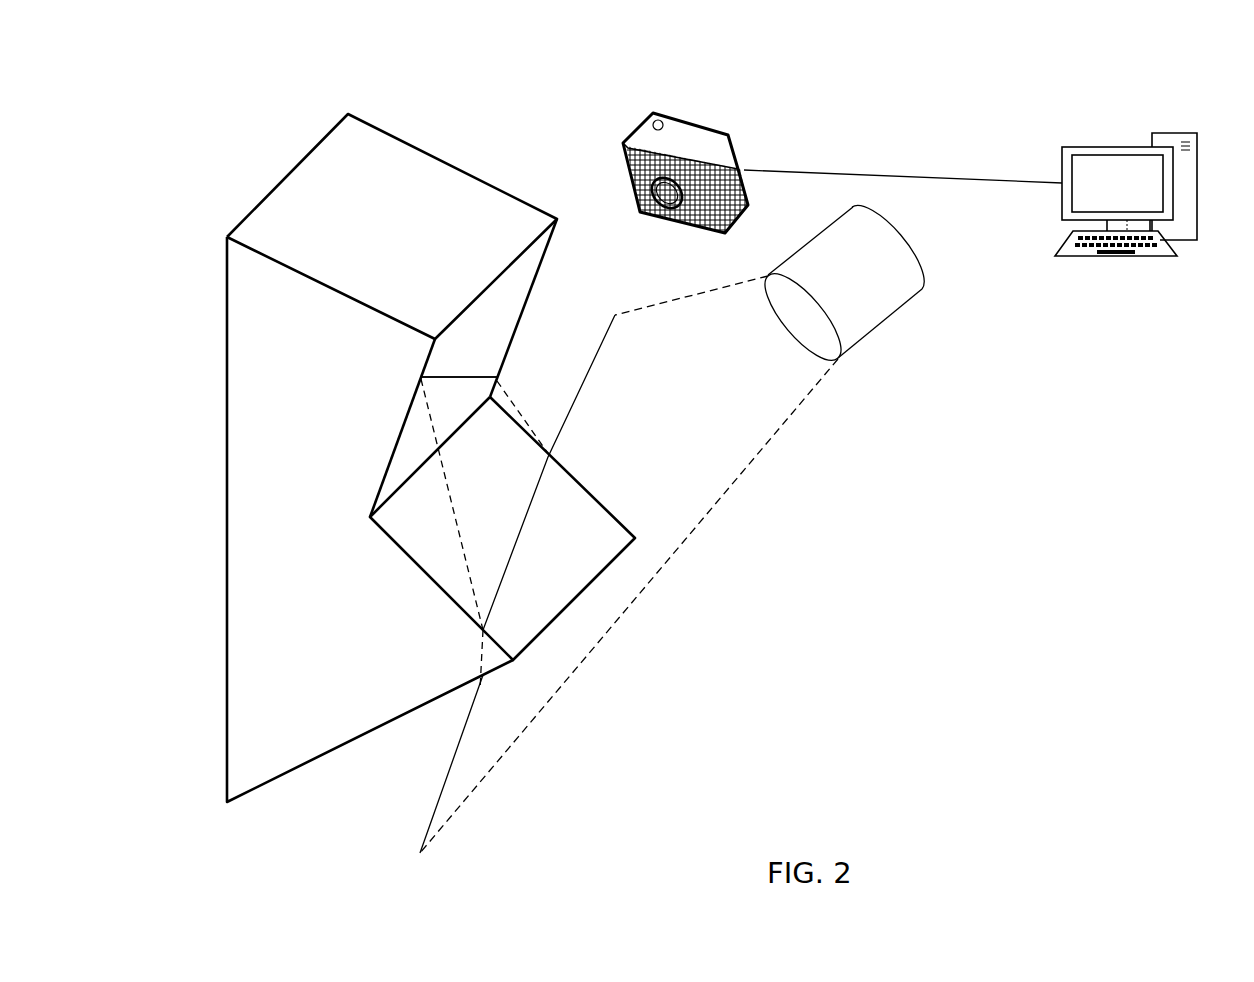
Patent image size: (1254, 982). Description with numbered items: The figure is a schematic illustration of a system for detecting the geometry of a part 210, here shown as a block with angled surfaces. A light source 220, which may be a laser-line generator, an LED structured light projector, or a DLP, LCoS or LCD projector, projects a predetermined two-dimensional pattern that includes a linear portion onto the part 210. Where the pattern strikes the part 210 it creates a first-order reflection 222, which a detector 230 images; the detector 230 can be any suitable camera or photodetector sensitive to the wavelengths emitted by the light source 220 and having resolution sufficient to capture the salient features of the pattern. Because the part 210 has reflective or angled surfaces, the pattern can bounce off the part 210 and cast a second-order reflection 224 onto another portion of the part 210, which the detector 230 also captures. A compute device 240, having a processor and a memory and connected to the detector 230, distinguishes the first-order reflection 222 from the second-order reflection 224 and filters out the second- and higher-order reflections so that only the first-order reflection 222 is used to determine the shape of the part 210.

The part 210 is at (225, 448).
The light source 220 is at (893, 313).
The first-order reflection 222 is at (540, 483).
The second-order reflection 224 is at (473, 377).
The detector 230 is at (693, 123).
The compute device 240 is at (1125, 262).